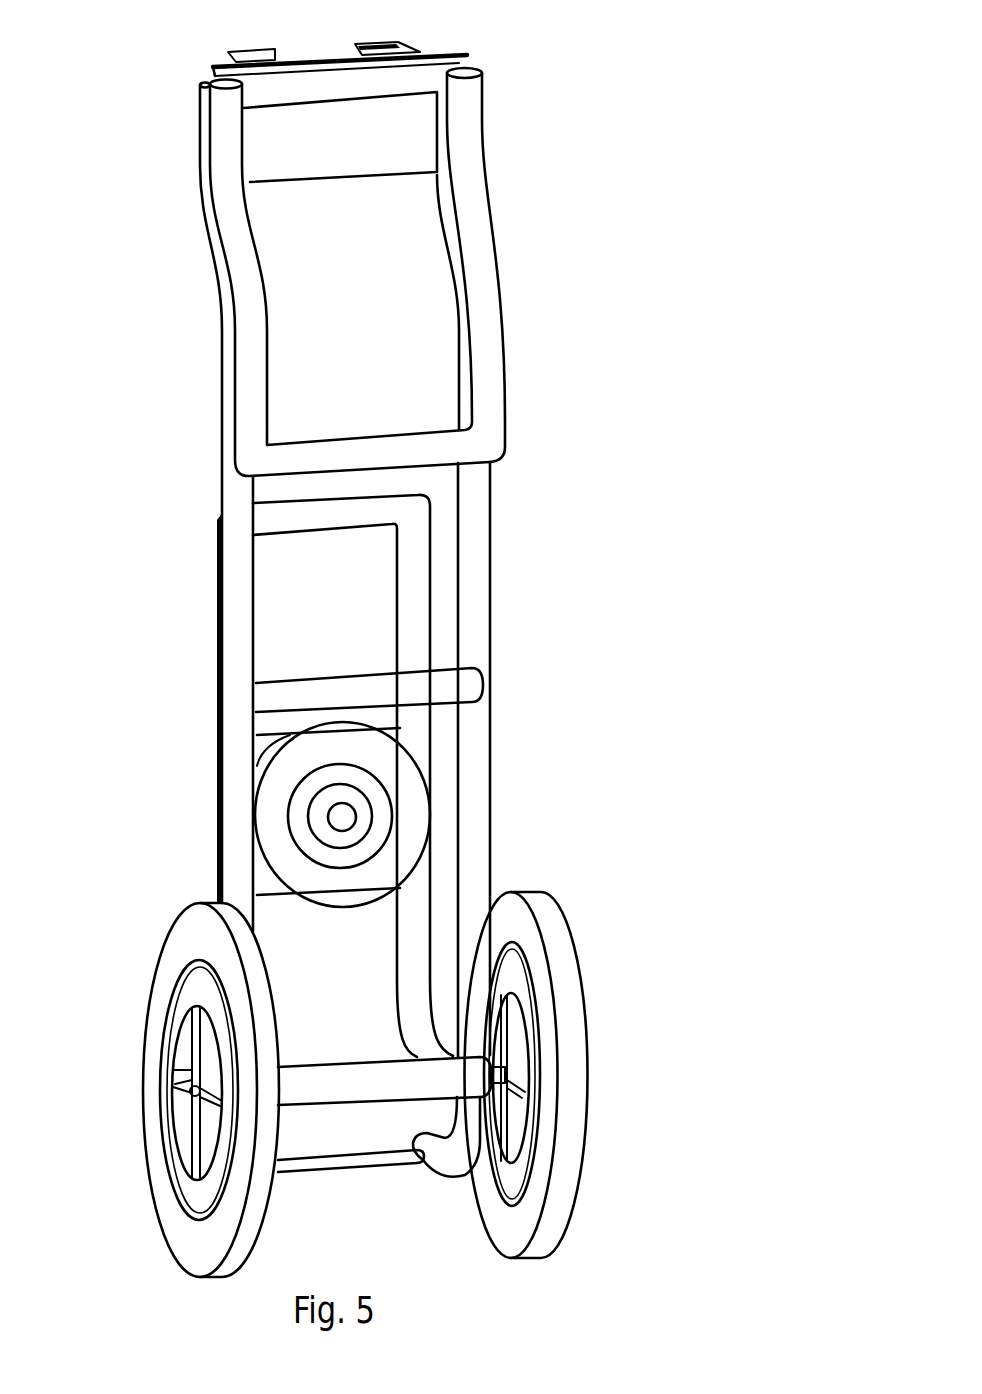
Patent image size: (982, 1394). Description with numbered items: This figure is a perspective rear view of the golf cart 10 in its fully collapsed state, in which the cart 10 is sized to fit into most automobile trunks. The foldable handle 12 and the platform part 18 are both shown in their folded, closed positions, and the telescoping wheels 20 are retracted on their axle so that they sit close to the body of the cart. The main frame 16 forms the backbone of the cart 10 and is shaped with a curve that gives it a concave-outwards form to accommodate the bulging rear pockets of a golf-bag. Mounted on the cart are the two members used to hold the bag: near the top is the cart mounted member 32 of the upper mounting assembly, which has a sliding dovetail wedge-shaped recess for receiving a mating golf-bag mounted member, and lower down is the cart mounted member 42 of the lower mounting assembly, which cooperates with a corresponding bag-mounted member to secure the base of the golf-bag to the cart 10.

The golf cart 10 is at (437, 641).
The foldable handle 12 is at (488, 410).
The main frame 16 is at (478, 623).
The platform part 18 is at (415, 562).
The wheels 20 is at (542, 915).
The cart mounted member of upper mounting assembly 32 is at (287, 142).
The cart mounted member of lower mounting assembly 42 is at (343, 815).